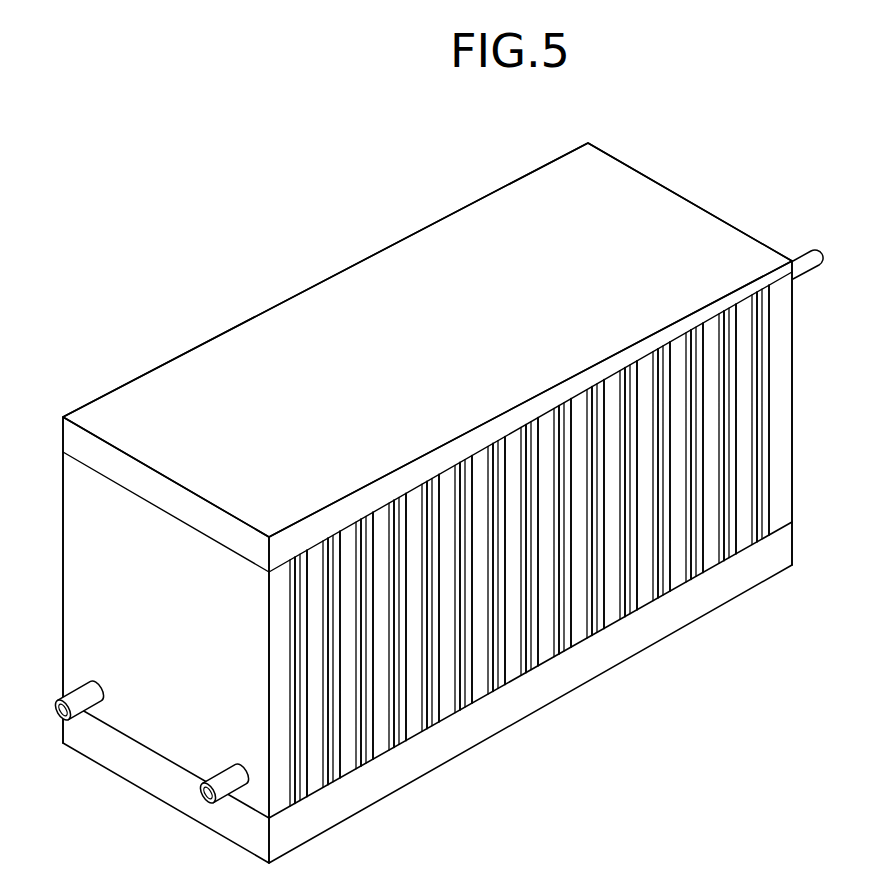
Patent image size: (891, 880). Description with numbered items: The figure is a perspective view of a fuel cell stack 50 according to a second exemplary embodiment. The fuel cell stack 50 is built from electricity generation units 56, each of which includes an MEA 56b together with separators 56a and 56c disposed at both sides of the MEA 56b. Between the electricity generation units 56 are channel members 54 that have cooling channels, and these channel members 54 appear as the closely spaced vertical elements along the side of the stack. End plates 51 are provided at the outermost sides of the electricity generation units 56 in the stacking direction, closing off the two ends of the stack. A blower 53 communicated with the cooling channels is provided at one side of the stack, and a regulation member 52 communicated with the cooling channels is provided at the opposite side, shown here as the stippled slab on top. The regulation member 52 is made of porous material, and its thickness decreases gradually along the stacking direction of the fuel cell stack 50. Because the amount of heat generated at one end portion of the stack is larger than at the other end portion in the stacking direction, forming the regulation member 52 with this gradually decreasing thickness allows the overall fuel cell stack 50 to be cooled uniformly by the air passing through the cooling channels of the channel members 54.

The fuel cell stack 50 is at (262, 207).
The end plate 51 is at (793, 402).
The regulation member 52 is at (172, 387).
The blower 53 is at (403, 768).
The channel member 54 is at (445, 691).
The electricity generation unit 56 is at (726, 700).
The separator 56a is at (582, 622).
The MEA 56b is at (594, 622).
The separator 56c is at (603, 613).